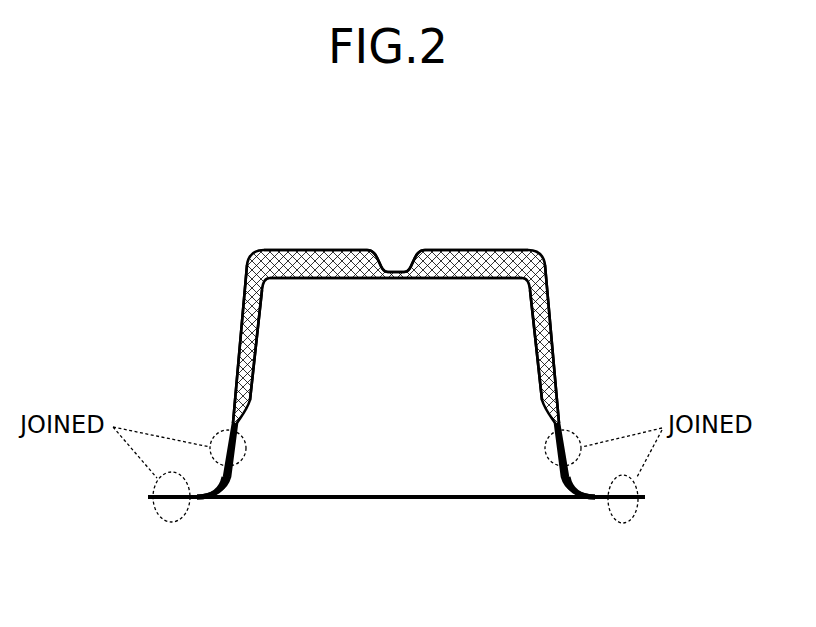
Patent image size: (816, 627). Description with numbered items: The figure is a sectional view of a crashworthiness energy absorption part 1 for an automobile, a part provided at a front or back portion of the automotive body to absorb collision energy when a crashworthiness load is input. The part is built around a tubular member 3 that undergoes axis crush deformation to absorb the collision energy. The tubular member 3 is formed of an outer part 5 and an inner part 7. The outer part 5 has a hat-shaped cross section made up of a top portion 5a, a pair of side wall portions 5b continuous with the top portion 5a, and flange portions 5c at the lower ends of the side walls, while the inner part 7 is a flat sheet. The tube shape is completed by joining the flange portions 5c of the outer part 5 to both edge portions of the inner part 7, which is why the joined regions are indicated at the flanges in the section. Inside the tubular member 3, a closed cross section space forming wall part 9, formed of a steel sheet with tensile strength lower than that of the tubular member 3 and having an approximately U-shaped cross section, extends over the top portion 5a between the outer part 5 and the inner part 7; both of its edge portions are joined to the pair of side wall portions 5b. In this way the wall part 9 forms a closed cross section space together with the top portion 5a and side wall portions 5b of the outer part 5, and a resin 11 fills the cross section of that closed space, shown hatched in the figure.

The crashworthiness energy absorption part 1 is at (88, 217).
The tubular member 3 is at (602, 584).
The outer part 5 is at (568, 396).
The top portion 5a is at (358, 249).
The side wall portions 5b is at (236, 355).
The flange portions 5c is at (168, 488).
The inner part 7 is at (545, 503).
The closed cross section space forming wall part 9 is at (263, 336).
The resin 11 is at (242, 323).